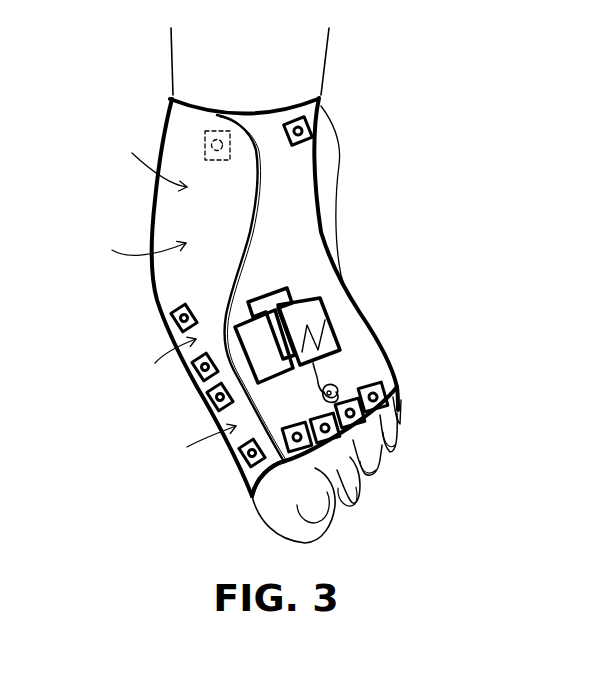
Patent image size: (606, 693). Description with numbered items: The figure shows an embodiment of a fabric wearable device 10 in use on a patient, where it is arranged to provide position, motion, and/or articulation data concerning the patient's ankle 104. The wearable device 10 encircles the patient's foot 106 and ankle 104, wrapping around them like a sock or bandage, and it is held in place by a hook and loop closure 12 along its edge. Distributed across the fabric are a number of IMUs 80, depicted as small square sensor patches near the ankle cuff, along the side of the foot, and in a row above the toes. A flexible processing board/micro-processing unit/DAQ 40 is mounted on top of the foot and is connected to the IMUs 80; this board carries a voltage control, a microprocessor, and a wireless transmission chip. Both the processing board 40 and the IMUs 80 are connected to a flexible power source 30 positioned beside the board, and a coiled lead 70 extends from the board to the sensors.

The wearable device 10 is at (385, 163).
The hook and loop closure 12 is at (193, 273).
The flexible power source 30 is at (322, 300).
The flexible processing board/micro-processing unit/DAQ 40 is at (287, 345).
The coil antenna / wire lead 70 is at (334, 389).
The IMUs 80 is at (295, 117).
The ankle 104 is at (182, 210).
The foot 106 is at (245, 472).